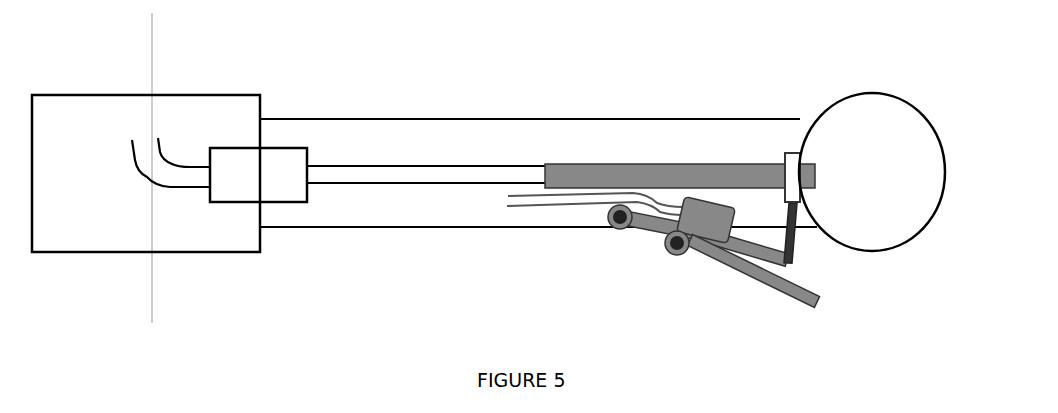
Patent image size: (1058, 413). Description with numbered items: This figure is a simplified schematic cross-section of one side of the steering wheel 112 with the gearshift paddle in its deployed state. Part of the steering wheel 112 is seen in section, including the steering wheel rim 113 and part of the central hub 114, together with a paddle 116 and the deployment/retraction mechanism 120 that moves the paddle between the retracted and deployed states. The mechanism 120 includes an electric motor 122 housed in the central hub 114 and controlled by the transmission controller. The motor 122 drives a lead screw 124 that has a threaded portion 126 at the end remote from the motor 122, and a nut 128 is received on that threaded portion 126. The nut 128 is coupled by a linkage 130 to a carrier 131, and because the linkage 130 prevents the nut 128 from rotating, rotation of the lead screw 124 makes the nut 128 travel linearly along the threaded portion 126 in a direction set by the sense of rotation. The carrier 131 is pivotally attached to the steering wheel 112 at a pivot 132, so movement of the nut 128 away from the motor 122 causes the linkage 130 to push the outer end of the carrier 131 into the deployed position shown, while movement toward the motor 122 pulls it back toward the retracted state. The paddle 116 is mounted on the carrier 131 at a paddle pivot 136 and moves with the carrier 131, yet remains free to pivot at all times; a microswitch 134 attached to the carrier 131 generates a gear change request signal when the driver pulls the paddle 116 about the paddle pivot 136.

The steering wheel 112 is at (342, 91).
The steering wheel rim 113 is at (842, 115).
The central hub 114 is at (102, 115).
The paddle 116 is at (777, 297).
The deployment/retraction mechanism 120 is at (660, 87).
The electric motor 122 is at (280, 195).
The lead screw 124 is at (403, 180).
The threaded portion 126 is at (580, 165).
The nut 128 is at (790, 153).
The linkage 130 is at (797, 245).
The carrier 131 is at (655, 237).
The pivot 132 is at (617, 228).
The microswitch 134 is at (722, 213).
The paddle pivot 136 is at (668, 253).